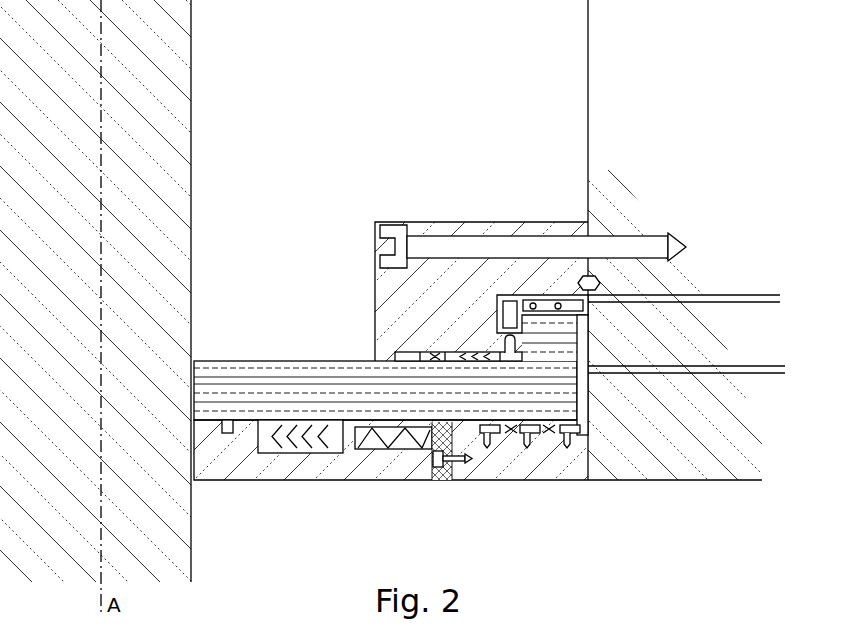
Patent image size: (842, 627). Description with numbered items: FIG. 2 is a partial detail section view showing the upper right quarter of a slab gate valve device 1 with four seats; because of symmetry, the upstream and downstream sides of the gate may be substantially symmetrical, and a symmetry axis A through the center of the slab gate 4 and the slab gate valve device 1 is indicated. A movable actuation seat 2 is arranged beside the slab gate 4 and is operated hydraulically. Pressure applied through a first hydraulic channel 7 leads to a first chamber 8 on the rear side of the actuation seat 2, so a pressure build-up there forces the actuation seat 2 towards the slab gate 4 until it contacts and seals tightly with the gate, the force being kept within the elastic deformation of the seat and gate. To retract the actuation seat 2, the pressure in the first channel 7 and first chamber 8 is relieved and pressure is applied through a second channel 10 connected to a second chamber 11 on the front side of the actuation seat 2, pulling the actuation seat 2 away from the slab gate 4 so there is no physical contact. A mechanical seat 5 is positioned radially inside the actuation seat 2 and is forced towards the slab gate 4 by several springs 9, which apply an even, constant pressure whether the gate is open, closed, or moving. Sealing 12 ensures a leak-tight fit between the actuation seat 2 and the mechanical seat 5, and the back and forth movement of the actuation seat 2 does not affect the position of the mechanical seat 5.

The slab gate valve device 1 is at (380, 88).
The actuation seat 2 is at (288, 360).
The slab gate 4 is at (193, 97).
The mechanical seat 5 is at (255, 482).
The first hydraulic channel 7 is at (720, 368).
The first chamber 8 is at (585, 437).
The springs 9 is at (407, 454).
The second channel 10 is at (695, 296).
The second chamber 11 is at (522, 350).
The sealing 12 is at (318, 455).